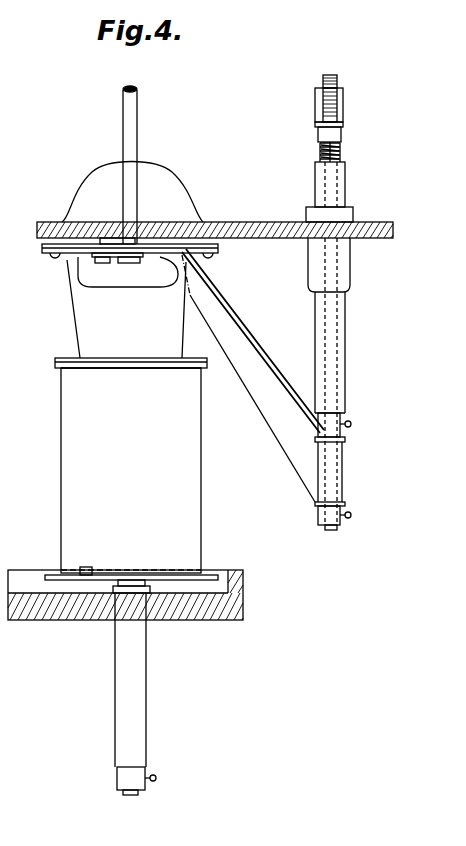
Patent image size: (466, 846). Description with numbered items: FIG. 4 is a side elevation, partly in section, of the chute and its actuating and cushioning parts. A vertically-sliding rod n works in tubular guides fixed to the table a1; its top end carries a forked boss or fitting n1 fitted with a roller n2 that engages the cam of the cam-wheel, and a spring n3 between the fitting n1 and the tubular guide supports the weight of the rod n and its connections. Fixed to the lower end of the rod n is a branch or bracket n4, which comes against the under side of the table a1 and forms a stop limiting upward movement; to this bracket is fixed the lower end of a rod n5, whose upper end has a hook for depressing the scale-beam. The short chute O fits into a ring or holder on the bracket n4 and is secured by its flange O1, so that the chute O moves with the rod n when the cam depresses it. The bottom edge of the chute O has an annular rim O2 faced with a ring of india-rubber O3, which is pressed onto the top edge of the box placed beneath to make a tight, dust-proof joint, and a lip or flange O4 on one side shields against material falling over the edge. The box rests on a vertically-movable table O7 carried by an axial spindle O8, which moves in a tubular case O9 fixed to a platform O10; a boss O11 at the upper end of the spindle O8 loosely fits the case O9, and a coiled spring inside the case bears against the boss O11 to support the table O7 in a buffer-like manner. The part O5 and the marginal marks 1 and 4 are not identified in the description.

The table a1 is at (62, 222).
The rod n5 is at (137, 139).
The lip or flange O4 is at (168, 192).
The flange O1 is at (220, 247).
The bell-shaped housing O5 is at (133, 286).
The chute O is at (85, 318).
The branch or bracket n4 is at (252, 343).
The annular flange or rim O2 is at (72, 358).
The ring of india-rubber O3 is at (57, 368).
The vertically-movable table O7 is at (212, 575).
The platform O10 is at (183, 620).
The boss O11 is at (113, 593).
The tubular guide or case O9 is at (146, 683).
The axial spindle O8 is at (132, 793).
The roller n2 is at (338, 86).
The boss or fitting n1 is at (340, 134).
The spring n3 is at (341, 151).
The vertically-sliding rod n is at (338, 263).
The partial numeral 1 is at (4, 209).
The partial numeral 4 is at (4, 266).